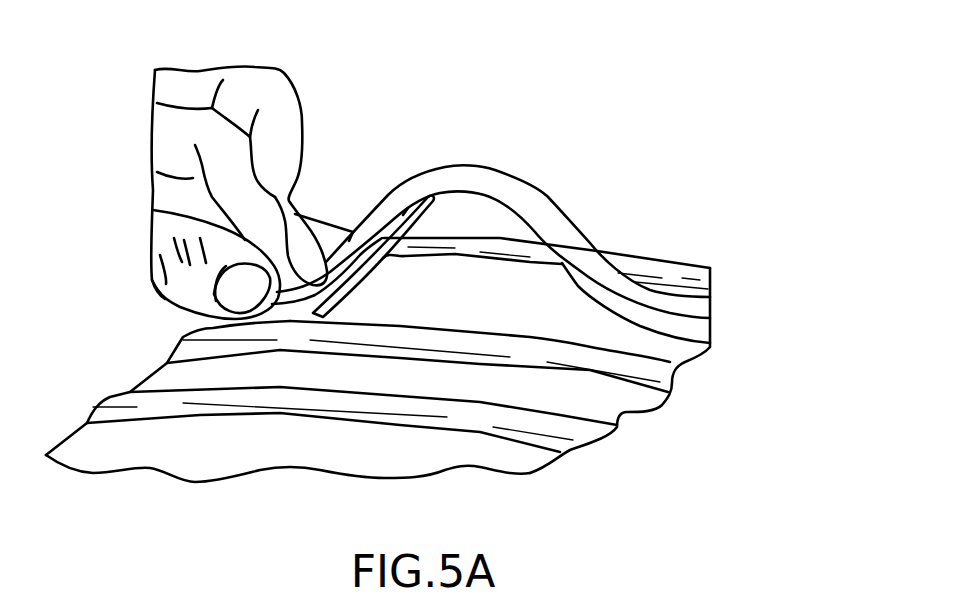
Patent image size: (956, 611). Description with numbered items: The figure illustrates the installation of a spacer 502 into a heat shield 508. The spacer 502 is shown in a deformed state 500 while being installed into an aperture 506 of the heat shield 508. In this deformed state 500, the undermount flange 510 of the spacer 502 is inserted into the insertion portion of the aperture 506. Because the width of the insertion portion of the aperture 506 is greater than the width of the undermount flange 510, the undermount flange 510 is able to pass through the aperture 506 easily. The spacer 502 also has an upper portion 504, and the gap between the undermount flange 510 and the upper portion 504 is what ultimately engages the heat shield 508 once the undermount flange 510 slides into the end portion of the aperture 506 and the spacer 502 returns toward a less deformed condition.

The deformed state 500 is at (612, 124).
The spacer 502 is at (517, 191).
The upper portion 504 is at (355, 238).
The aperture 506 is at (347, 303).
The heat shield 508 is at (190, 377).
The undermount flange 510 is at (376, 262).